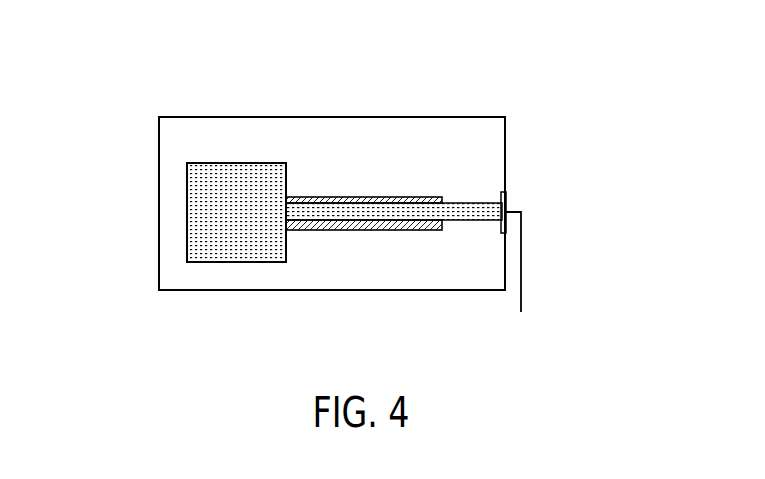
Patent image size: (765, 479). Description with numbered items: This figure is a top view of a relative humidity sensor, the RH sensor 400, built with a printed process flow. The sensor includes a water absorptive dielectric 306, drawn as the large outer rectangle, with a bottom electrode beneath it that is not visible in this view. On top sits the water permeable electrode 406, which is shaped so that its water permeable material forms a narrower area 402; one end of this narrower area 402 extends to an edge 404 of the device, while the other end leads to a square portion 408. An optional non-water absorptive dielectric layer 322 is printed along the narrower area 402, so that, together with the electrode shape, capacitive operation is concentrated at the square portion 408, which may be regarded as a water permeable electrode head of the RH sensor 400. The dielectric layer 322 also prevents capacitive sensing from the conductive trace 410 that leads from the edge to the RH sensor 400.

The RH sensor 400 is at (178, 78).
The water absorptive dielectric 306 is at (225, 117).
The square portion 408 is at (247, 180).
The non-water absorptive dielectric layer 322 is at (325, 198).
The narrower area 402 is at (448, 210).
The edge 404 is at (505, 192).
The water permeable electrode 406 is at (187, 224).
The conductive trace 410 is at (521, 302).